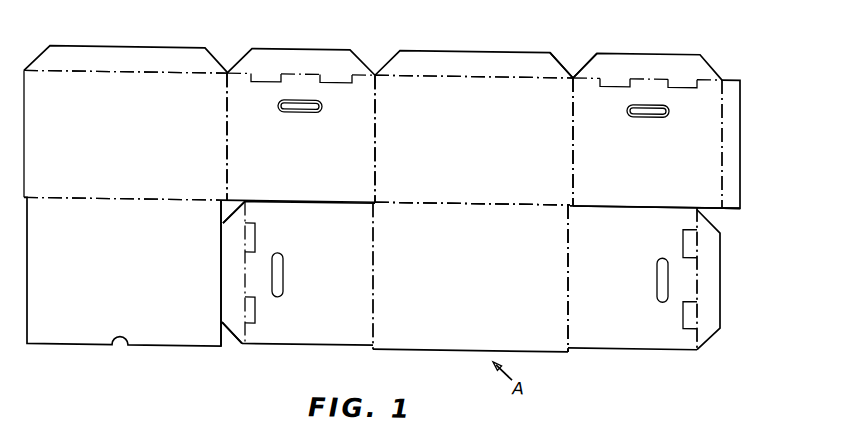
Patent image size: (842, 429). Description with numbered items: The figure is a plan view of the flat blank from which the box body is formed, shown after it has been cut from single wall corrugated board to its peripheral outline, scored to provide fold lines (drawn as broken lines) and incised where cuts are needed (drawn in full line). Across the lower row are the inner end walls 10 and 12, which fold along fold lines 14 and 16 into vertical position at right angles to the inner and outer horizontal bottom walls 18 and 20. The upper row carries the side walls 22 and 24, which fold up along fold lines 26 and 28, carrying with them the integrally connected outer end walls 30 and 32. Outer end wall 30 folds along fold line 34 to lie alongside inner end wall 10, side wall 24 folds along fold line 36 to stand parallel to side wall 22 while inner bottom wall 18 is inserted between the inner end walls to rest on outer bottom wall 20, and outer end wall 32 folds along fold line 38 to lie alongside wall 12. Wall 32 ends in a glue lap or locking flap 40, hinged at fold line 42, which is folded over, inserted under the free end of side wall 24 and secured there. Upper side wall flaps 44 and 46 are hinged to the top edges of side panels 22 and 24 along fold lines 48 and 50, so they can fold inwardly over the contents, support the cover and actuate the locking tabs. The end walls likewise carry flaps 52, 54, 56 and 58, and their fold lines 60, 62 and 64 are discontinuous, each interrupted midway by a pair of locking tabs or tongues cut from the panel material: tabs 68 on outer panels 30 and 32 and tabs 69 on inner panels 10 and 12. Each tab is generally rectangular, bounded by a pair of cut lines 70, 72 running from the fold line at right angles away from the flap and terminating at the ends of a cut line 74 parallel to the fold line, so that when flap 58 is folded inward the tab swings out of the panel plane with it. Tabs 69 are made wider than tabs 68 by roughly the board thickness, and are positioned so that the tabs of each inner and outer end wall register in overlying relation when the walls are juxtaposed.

The inner end wall 10 is at (315, 276).
The inner end wall 12 is at (600, 277).
The fold line 14 is at (376, 277).
The fold line 16 is at (566, 275).
The inner bottom wall 18 is at (110, 273).
The outer bottom wall 20 is at (468, 274).
The side wall 22 is at (455, 140).
The side wall 24 is at (115, 137).
The fold line 26 is at (521, 196).
The fold line 28 is at (172, 195).
The outer end wall 30 is at (288, 138).
The outer end wall 32 is at (637, 143).
The fold line 34 is at (377, 132).
The fold line 36 is at (226, 130).
The fold line 38 is at (574, 152).
The glue lap or locking flap 40 is at (742, 78).
The fold line 42 is at (719, 125).
The upper side wall flap 44 is at (478, 45).
The upper side wall flap 46 is at (168, 44).
The fold line 48 is at (495, 72).
The fold line 50 is at (97, 72).
The flap 52 is at (228, 334).
The flap 54 is at (722, 286).
The flap 56 is at (290, 43).
The flap 58 is at (684, 42).
The fold line 60 is at (243, 262).
The fold line 62 is at (698, 267).
The fold line 64 is at (300, 69).
The locking tabs 68 is at (270, 78).
The locking tabs 69 is at (257, 231).
The cut line 70 is at (605, 71).
The cut line 72 is at (625, 73).
The cut line 74 is at (648, 100).